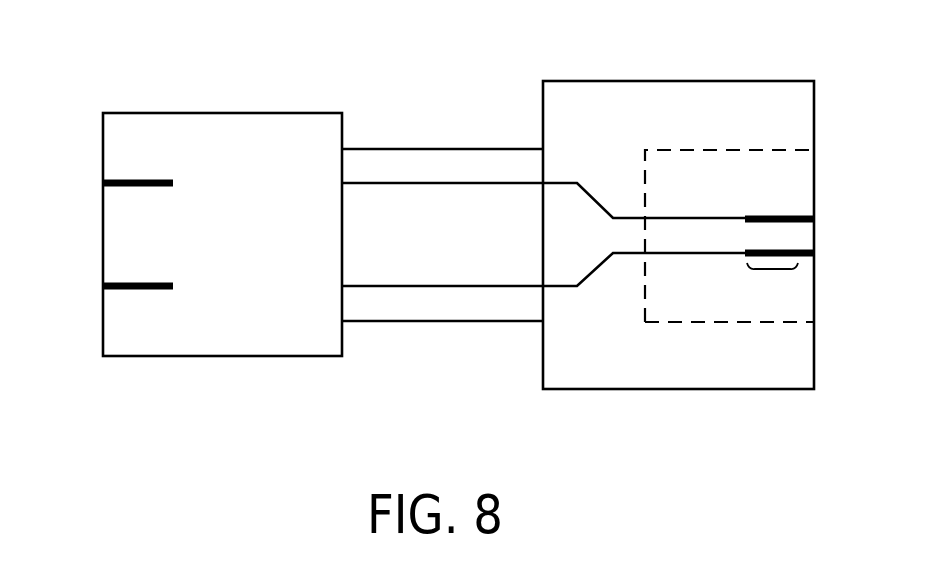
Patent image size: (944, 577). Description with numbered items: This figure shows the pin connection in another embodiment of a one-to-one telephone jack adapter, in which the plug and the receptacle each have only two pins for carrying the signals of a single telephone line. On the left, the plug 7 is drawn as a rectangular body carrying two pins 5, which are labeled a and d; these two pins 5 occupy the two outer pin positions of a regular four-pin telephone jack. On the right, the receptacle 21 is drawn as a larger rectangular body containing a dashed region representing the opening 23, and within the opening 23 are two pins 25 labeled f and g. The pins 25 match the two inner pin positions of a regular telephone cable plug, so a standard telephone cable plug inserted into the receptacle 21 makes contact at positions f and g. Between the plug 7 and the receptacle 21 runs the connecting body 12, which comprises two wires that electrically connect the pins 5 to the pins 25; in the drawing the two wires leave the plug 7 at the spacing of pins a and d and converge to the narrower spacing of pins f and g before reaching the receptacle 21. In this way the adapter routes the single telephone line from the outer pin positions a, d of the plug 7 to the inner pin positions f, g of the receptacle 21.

The pins 5 is at (143, 180).
The plug 7 is at (213, 125).
The connecting body 12 is at (390, 312).
The receptacle 21 is at (782, 91).
The opening 23 is at (802, 164).
The pins 25 is at (773, 271).
The pin position label a is at (100, 185).
The pin position label d is at (100, 287).
The pin position label f is at (818, 221).
The pin position label g is at (818, 255).